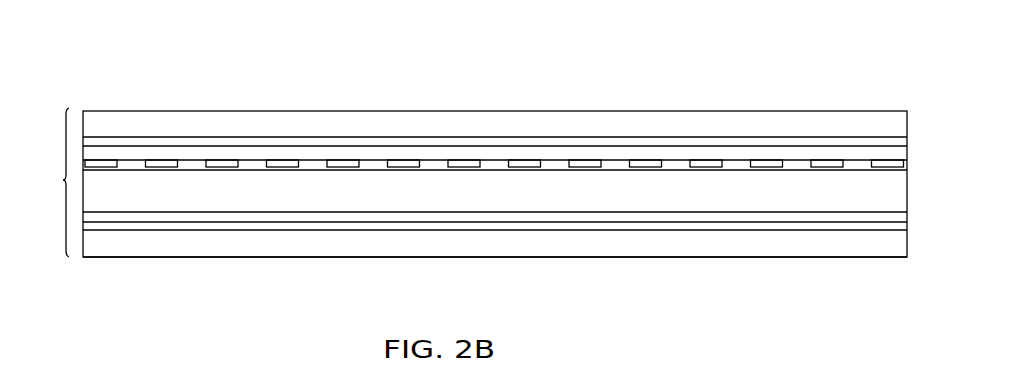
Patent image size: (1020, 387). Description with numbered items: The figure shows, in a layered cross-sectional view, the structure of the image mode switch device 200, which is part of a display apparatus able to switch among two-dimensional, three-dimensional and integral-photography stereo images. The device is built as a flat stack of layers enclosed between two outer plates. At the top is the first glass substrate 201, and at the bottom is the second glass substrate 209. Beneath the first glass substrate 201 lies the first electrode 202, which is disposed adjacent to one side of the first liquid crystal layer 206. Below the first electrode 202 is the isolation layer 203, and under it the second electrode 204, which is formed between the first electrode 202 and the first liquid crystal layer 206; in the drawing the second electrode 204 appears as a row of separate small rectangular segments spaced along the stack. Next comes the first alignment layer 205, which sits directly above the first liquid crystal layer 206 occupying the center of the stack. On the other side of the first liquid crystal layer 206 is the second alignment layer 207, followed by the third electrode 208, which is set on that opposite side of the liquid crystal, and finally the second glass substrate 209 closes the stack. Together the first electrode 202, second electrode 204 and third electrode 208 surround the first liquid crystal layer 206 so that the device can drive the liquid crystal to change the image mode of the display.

The image mode switch device 200 is at (457, 182).
The first glass substrate 201 is at (208, 123).
The first electrode 202 is at (380, 143).
The isolation layer 203 is at (535, 153).
The second electrode 204 is at (770, 163).
The first alignment layer 205 is at (133, 165).
The first liquid crystal layer 206 is at (495, 195).
The second alignment layer 207 is at (185, 217).
The third electrode 208 is at (640, 225).
The second glass substrate 209 is at (317, 247).